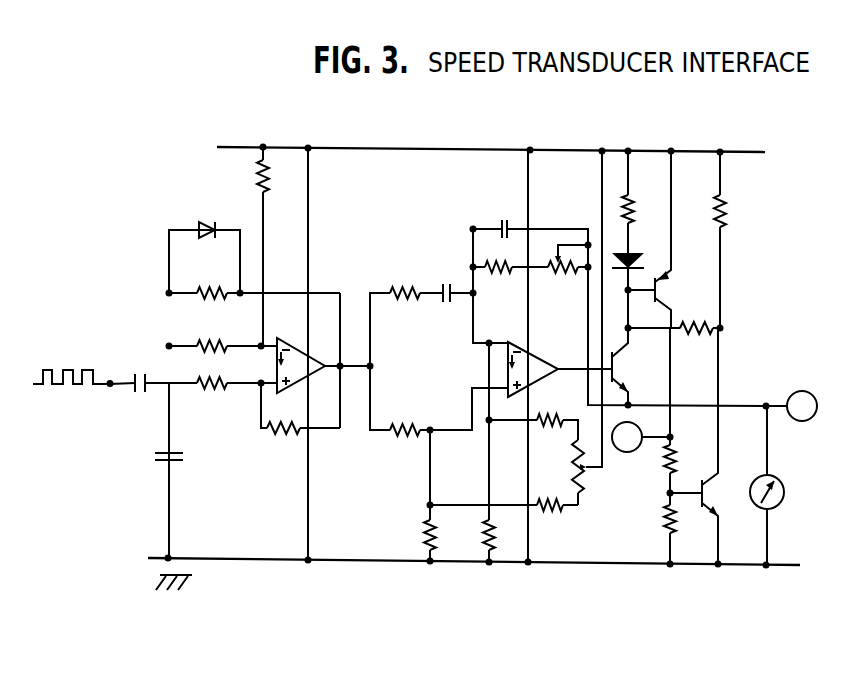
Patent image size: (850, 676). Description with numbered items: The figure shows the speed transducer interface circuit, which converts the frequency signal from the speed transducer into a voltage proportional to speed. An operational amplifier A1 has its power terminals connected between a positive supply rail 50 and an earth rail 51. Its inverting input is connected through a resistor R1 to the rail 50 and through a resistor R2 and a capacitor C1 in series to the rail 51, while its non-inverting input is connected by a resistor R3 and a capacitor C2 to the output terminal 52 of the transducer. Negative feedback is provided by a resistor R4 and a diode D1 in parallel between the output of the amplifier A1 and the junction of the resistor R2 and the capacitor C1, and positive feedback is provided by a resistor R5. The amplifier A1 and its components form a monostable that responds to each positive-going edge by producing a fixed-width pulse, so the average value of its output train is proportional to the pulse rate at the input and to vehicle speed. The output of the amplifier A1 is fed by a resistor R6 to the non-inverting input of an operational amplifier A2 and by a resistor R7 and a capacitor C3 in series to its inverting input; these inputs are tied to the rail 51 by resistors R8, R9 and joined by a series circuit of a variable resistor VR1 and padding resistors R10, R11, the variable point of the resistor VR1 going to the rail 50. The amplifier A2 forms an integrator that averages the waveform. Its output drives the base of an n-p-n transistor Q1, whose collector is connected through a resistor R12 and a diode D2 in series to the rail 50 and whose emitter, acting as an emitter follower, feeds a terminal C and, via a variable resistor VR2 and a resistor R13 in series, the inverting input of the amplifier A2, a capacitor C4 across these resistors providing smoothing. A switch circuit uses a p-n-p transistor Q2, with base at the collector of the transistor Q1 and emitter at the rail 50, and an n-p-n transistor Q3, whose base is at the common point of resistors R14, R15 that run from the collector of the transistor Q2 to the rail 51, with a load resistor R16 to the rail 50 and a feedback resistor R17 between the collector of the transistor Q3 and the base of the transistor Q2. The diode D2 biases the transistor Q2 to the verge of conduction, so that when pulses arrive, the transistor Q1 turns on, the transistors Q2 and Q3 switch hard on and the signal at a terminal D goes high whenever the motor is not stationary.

The positive supply rail 50 is at (640, 152).
The earth rail 51 is at (446, 567).
The output terminal of the speed transducer 52 is at (108, 390).
The capacitor C1 is at (183, 462).
The capacitor C2 is at (141, 393).
The capacitor C3 is at (444, 283).
The capacitor C4 is at (503, 221).
The diode D1 is at (207, 220).
The diode D2 is at (638, 264).
The resistor R1 is at (258, 187).
The resistor R2 is at (214, 338).
The resistor R3 is at (218, 391).
The resistor R4 is at (216, 287).
The resistor R5 is at (274, 441).
The resistor R6 is at (402, 440).
The resistor R7 is at (402, 286).
The resistor R8 is at (482, 527).
The resistor R9 is at (424, 530).
The padding resistor R10 is at (542, 417).
The padding resistor R11 is at (552, 512).
The resistor R12 is at (633, 214).
The resistor R13 is at (494, 277).
The resistor R14 is at (676, 462).
The resistor R15 is at (660, 520).
The load resistor R16 is at (729, 216).
The feedback resistor R17 is at (688, 325).
The variable resistor VR1 is at (586, 472).
The variable resistor VR2 is at (559, 276).
The operational amplifier A1 is at (305, 347).
The operational amplifier A2 is at (540, 362).
The n-p-n transistor Q1 is at (620, 372).
The p-n-p transistor Q2 is at (668, 291).
The n-p-n transistor Q3 is at (712, 508).
The terminal D is at (643, 437).
The terminal C is at (790, 406).